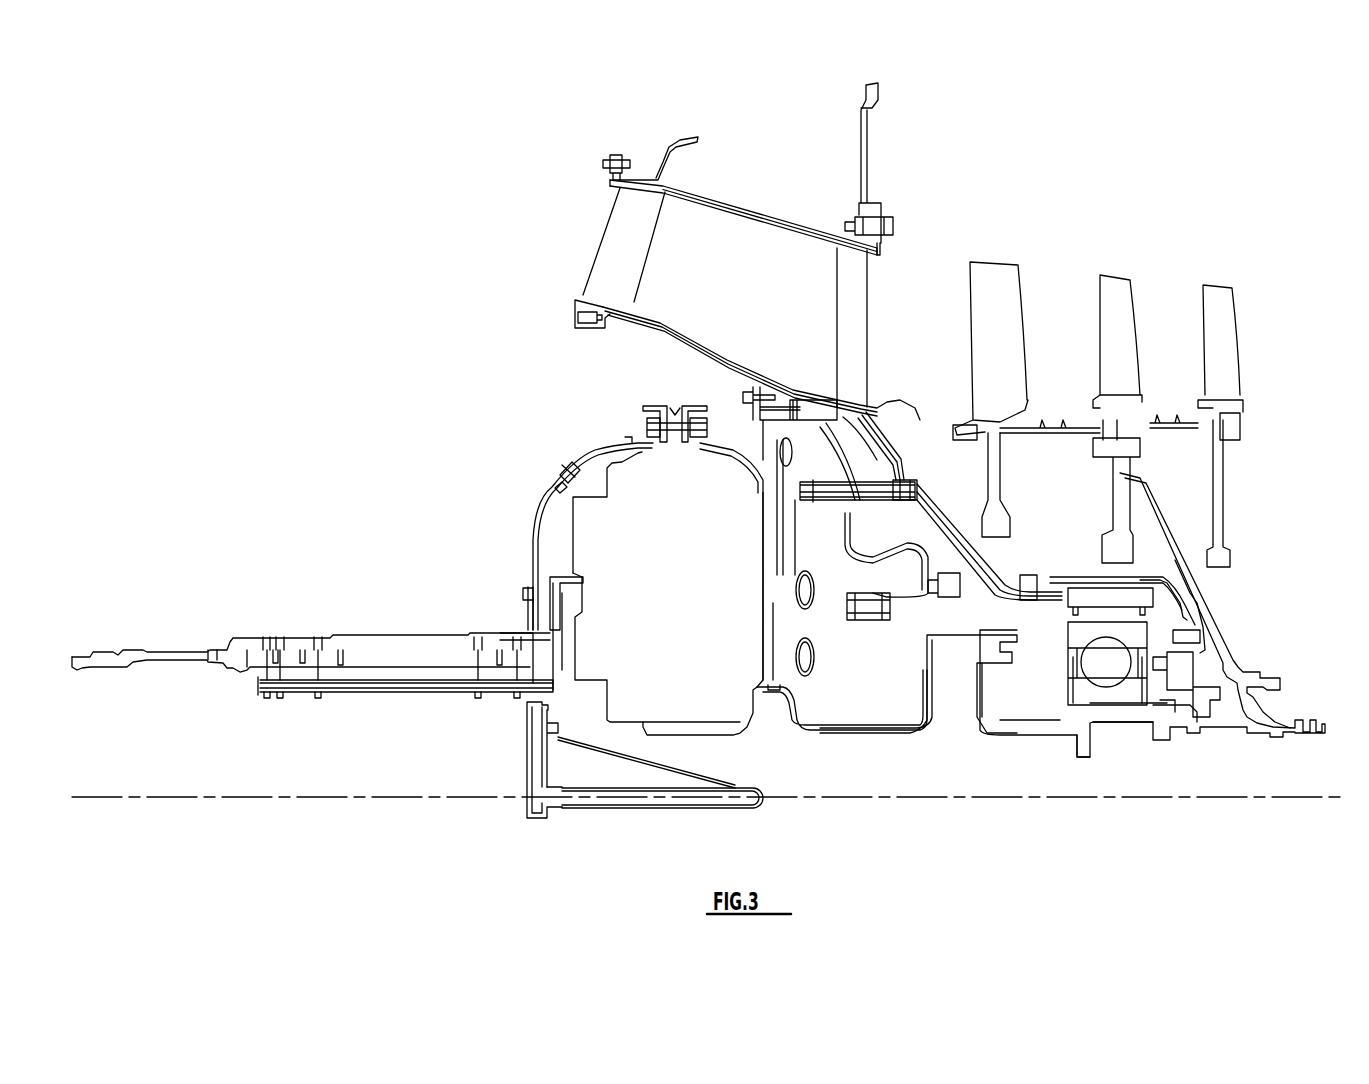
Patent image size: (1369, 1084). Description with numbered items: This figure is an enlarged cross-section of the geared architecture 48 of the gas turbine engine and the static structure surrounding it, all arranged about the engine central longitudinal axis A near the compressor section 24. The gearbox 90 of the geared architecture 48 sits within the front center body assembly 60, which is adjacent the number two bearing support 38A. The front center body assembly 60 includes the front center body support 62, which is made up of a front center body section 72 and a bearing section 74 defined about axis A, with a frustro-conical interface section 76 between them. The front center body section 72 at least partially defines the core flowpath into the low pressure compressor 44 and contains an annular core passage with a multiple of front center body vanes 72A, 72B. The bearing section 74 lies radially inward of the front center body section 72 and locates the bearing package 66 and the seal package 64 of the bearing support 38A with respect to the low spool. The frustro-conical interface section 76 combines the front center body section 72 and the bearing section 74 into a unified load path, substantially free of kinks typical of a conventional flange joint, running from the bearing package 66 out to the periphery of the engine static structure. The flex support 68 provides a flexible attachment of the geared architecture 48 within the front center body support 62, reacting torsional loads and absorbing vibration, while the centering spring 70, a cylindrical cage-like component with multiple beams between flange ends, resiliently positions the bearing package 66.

The compressor section 24 is at (1138, 363).
The #2 bearing support 38A is at (1078, 769).
The low pressure compressor 44 is at (1256, 407).
The geared architecture 48 is at (490, 526).
The front center body assembly 60 is at (590, 331).
The front center body support 62 is at (740, 162).
The seal package 64 is at (1195, 710).
The bearing package 66 is at (1120, 697).
The flex support 68 is at (900, 597).
The centering spring 70 is at (973, 607).
The front center body section 72 is at (817, 400).
The front center body vane 72A is at (632, 270).
The front center body vane 72B is at (850, 302).
The bearing section 74 is at (1135, 585).
The frustro-conical interface section 76 is at (940, 500).
The gearbox 90 is at (681, 597).
The engine central longitudinal axis A is at (1302, 800).